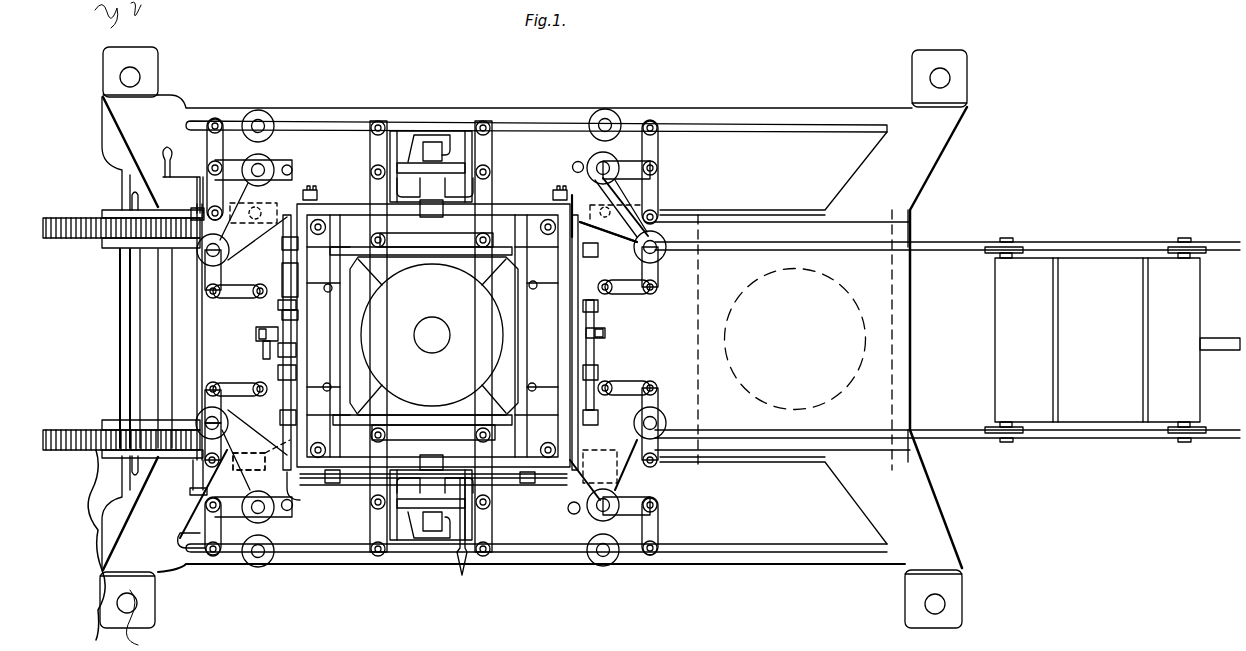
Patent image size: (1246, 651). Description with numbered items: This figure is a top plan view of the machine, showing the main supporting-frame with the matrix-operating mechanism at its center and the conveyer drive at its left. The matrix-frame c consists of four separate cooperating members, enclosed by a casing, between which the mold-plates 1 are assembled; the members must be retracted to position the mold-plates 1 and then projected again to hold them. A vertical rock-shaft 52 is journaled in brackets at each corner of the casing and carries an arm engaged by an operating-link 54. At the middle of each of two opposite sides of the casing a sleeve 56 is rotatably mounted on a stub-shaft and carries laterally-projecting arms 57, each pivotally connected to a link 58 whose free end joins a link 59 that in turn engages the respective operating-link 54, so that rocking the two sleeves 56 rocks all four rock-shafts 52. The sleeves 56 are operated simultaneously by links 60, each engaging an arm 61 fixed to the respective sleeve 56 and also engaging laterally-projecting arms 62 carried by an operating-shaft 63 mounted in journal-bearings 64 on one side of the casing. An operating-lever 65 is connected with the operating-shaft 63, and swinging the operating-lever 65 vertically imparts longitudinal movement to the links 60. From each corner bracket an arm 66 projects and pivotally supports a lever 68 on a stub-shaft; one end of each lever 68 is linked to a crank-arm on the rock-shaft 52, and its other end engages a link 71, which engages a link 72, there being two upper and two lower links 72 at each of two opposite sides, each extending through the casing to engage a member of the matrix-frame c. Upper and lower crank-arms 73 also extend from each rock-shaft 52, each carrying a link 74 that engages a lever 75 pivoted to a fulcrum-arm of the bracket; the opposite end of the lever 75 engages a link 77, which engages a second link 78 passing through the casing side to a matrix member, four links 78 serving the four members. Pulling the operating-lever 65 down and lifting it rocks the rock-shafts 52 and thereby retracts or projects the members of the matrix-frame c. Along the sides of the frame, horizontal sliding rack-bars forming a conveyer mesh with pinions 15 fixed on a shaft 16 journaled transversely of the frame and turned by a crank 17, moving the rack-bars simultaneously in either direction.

The mold-plates 1 is at (434, 336).
The matrix-frame c is at (433, 338).
The pinions 15 is at (95, 233).
The shaft 16 is at (203, 309).
The crank 17 is at (172, 165).
The vertical rock-shaft 52 is at (616, 183).
The operating-link 54 is at (258, 122).
The sleeve 56 is at (256, 333).
The laterally-projecting arms 57 is at (298, 318).
The link 58 is at (285, 300).
The link 59 is at (283, 252).
The links 60 is at (270, 373).
The arm 61 is at (262, 340).
The laterally-projecting arms 62 is at (250, 485).
The operating-shaft 63 is at (357, 487).
The journal-bearings 64 is at (332, 485).
The operating-lever 65 is at (466, 520).
The arm 66 is at (660, 228).
The lever 68 is at (660, 274).
The link 71 is at (252, 292).
The links 72 is at (548, 328).
The crank-arms 73 is at (627, 178).
The link 74 is at (207, 151).
The lever 75 is at (318, 121).
The link 77 is at (492, 152).
The second link 78 is at (492, 191).